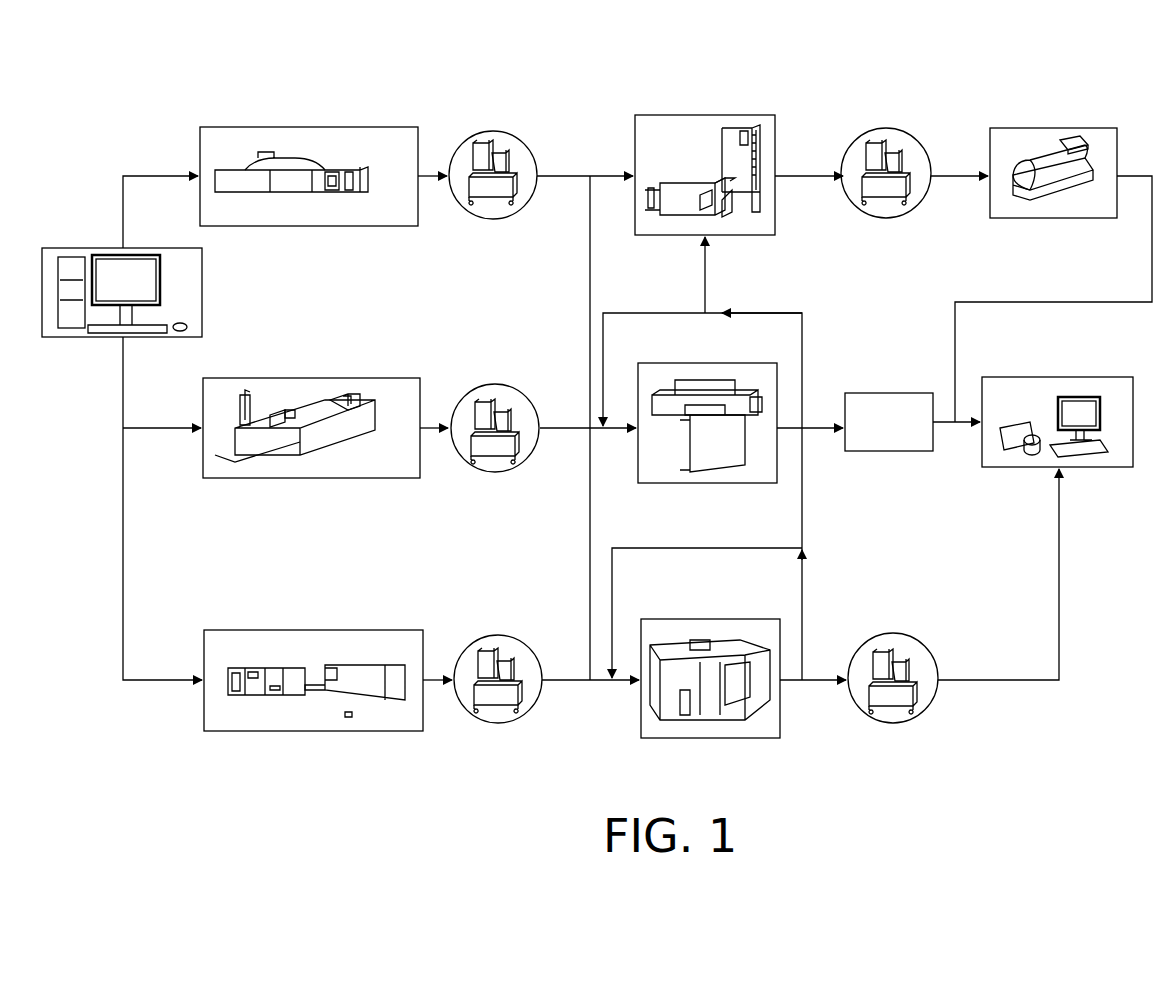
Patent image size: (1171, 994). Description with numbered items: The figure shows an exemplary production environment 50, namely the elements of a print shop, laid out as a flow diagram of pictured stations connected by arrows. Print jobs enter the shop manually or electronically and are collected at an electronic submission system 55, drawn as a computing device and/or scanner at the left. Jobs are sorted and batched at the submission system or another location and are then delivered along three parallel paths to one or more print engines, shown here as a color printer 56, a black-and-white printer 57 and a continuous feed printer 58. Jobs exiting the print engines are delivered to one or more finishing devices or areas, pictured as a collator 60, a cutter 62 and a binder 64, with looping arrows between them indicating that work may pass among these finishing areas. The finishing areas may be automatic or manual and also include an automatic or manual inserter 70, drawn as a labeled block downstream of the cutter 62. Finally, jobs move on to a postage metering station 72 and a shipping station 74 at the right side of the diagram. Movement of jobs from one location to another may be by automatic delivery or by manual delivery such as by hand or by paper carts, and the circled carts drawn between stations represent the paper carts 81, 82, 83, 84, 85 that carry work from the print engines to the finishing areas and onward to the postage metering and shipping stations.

The production environment 50 is at (145, 111).
The electronic submission system 55 is at (70, 337).
The color printer 56 is at (327, 226).
The black-and-white printer 57 is at (330, 478).
The continuous feed printer 58 is at (333, 731).
The collator 60 is at (717, 235).
The cutter 62 is at (718, 483).
The binder 64 is at (723, 738).
The inserter 70 is at (887, 451).
The postage metering station 72 is at (1049, 218).
The shipping station 74 is at (1085, 467).
The paper cart 81 is at (492, 219).
The paper cart 82 is at (497, 477).
The paper cart 83 is at (498, 727).
The paper cart 84 is at (887, 218).
The paper cart 85 is at (890, 720).